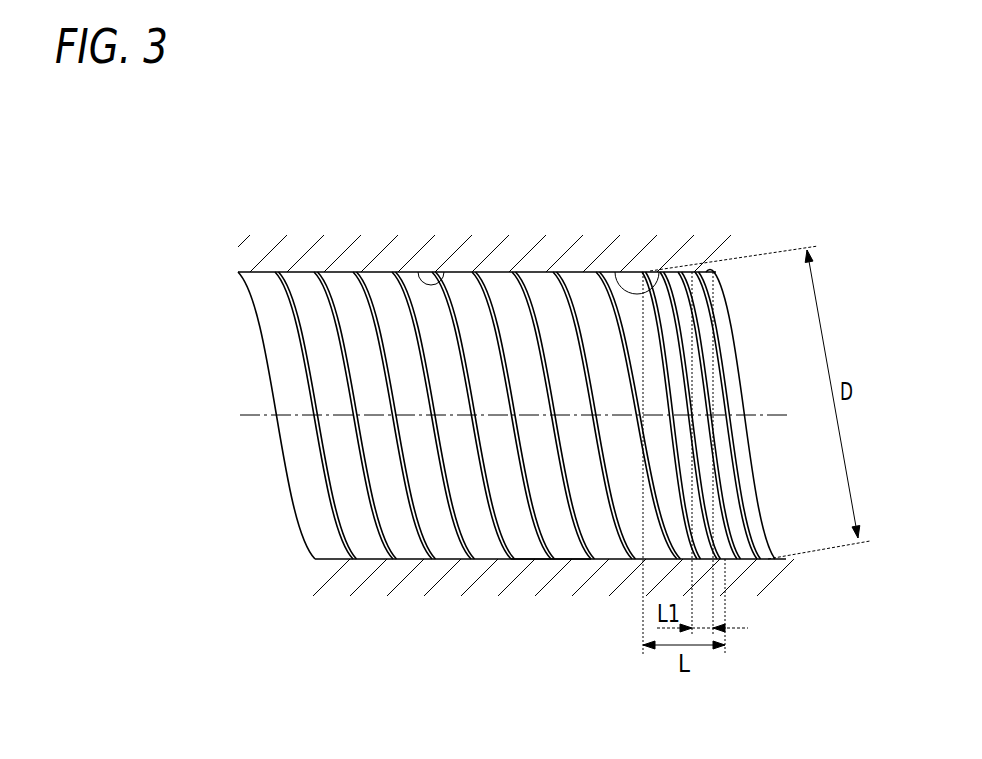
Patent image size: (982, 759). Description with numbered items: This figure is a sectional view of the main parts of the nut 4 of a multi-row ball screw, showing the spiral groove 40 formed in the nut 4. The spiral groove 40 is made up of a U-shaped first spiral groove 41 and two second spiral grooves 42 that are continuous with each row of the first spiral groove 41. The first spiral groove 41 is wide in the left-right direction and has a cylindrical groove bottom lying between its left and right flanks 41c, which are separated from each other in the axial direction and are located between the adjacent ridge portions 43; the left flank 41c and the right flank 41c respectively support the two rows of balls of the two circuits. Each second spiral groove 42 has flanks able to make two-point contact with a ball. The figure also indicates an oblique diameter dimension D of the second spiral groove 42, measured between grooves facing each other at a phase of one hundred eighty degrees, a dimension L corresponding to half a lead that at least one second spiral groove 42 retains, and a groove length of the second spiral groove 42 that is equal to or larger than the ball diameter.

The nut 4 is at (516, 399).
The spiral groove 40 is at (617, 180).
The first spiral groove 41 is at (446, 273).
The second spiral groove 42 is at (622, 280).
The ridge portion 43 is at (512, 566).
The flank 41c is at (566, 566).